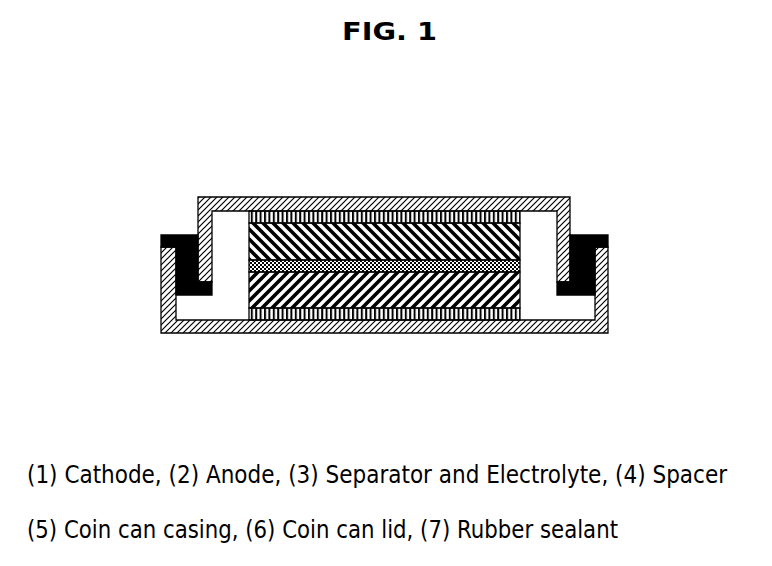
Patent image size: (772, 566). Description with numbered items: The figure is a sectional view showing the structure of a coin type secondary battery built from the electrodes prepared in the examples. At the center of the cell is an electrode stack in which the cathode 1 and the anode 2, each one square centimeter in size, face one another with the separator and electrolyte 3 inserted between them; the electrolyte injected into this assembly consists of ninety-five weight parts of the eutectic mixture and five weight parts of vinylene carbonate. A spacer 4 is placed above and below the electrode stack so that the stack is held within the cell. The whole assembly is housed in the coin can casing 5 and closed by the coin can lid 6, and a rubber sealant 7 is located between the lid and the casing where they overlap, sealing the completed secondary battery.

The cathode 1 is at (382, 230).
The anode 2 is at (345, 300).
The separator and electrolyte 3 is at (440, 253).
The spacer 4 is at (309, 206).
The coin can casing 5 is at (444, 347).
The coin can lid 6 is at (443, 184).
The rubber sealant 7 is at (186, 222).